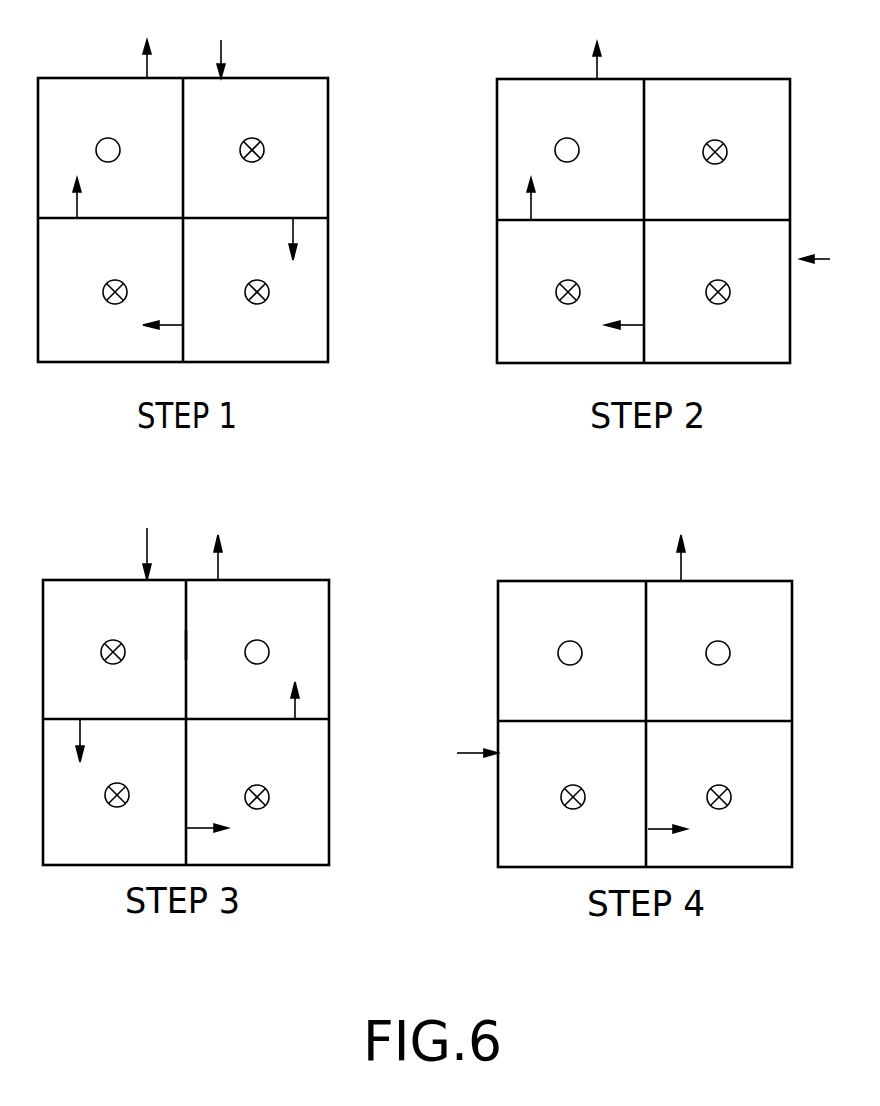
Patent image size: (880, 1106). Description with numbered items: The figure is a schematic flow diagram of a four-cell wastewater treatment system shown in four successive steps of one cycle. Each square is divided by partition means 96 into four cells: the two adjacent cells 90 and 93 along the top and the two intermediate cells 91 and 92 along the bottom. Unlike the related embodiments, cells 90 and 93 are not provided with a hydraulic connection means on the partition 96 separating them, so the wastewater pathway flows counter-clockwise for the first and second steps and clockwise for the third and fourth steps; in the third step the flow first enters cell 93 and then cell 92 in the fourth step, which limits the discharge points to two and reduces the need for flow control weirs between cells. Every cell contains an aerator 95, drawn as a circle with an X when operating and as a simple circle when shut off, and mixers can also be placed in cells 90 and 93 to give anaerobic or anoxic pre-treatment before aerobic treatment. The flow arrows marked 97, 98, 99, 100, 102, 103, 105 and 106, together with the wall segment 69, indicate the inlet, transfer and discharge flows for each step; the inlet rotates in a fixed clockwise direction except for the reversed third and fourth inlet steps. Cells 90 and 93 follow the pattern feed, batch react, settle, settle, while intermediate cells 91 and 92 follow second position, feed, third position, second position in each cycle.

The cell 90 is at (323, 118).
The intermediate cell 91 is at (308, 353).
The intermediate cell 92 is at (88, 351).
The cell 93 is at (88, 113).
The aerator 95 is at (117, 158).
The partition means 96 is at (184, 190).
The outlet port flow 97 is at (221, 80).
The port flow 98 is at (293, 220).
The transfer port flow 99 is at (183, 325).
The port flow 100 is at (95, 198).
The outlet flow 102 is at (147, 78).
The inlet flow 103 is at (790, 258).
The inlet flow 105 is at (146, 582).
The inlet flow 106 is at (500, 753).
The partition wall 69 is at (187, 646).